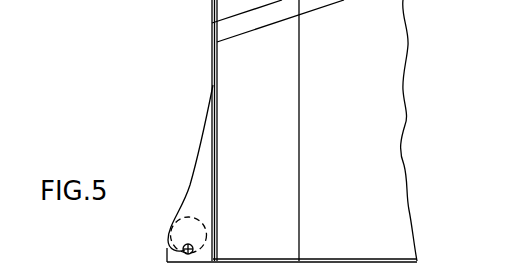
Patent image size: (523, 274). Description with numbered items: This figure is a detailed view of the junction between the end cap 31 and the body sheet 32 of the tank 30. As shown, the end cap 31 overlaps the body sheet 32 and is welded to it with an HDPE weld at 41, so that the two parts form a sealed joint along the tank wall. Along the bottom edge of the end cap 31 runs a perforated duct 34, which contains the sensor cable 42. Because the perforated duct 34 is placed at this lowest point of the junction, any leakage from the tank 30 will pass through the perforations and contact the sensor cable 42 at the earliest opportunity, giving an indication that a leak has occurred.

The tank 30 is at (213, 135).
The end cap 31 is at (192, 172).
The body sheet 32 is at (358, 204).
The perforated duct 34 is at (182, 214).
The HDPE weld 41 is at (299, 104).
The sensor cable 42 is at (183, 250).